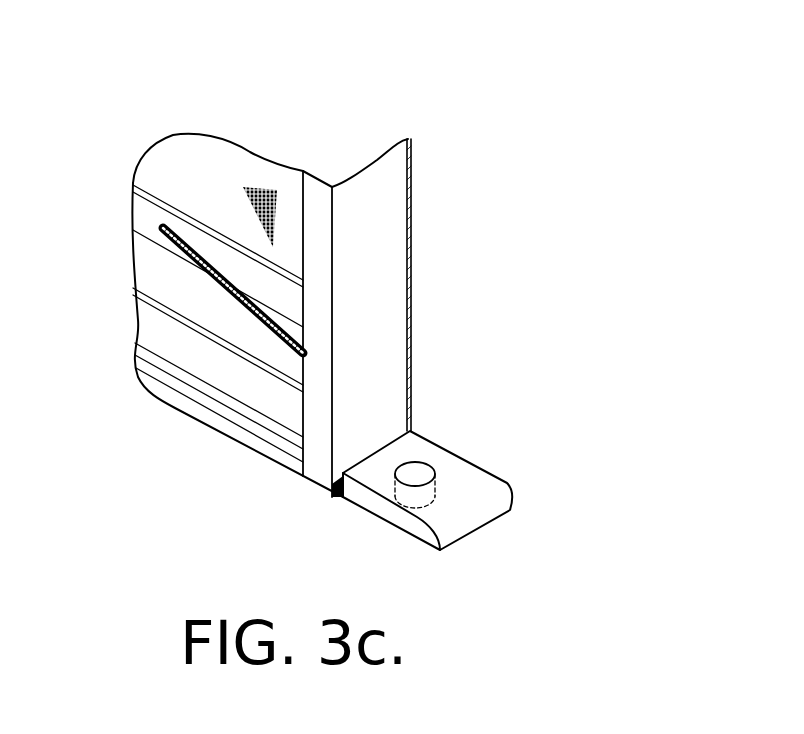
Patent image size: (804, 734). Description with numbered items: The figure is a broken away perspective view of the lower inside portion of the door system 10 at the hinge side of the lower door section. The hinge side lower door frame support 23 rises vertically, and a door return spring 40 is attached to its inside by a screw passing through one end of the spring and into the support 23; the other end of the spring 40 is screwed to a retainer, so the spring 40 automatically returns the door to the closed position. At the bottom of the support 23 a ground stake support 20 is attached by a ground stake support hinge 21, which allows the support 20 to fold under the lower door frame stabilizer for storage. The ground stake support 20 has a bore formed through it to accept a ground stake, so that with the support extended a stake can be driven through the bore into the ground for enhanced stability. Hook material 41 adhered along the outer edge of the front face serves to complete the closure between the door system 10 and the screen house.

The door system 10 is at (298, 340).
The hinge side lower door frame support 23 is at (373, 288).
The door return spring 40 is at (187, 258).
The ground stake support 20 is at (415, 492).
The hook material 41 is at (447, 457).
The ground stake support hinge 21 is at (333, 496).